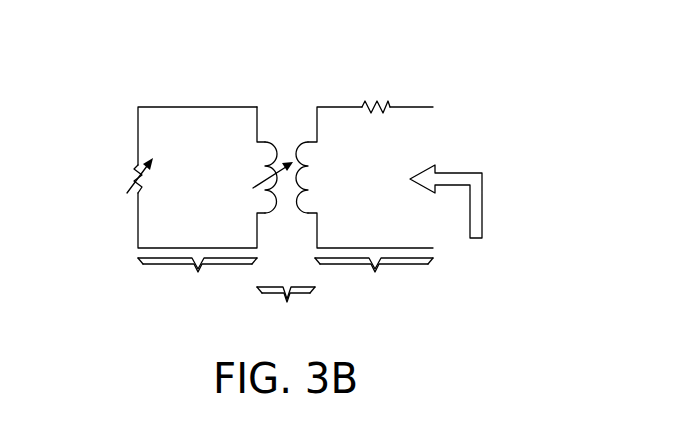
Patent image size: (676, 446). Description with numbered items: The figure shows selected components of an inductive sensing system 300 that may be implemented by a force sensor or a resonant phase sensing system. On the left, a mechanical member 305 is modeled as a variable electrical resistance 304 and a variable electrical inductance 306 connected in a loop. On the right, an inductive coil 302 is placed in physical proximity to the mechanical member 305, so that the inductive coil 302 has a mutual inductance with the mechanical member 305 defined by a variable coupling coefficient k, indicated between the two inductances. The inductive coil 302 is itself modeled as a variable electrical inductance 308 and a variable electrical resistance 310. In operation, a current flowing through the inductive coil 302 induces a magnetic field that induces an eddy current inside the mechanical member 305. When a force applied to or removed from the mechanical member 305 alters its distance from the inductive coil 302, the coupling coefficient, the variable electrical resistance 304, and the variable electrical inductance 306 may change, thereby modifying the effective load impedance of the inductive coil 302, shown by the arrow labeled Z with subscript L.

The inductive sensing system 300 is at (218, 68).
The inductive coil 302 is at (349, 175).
The variable electrical resistance 304 is at (133, 175).
The mechanical member 305 is at (180, 191).
The variable electrical inductance 306 is at (265, 140).
The variable electrical inductance 308 is at (305, 217).
The variable electrical resistance 310 is at (377, 105).